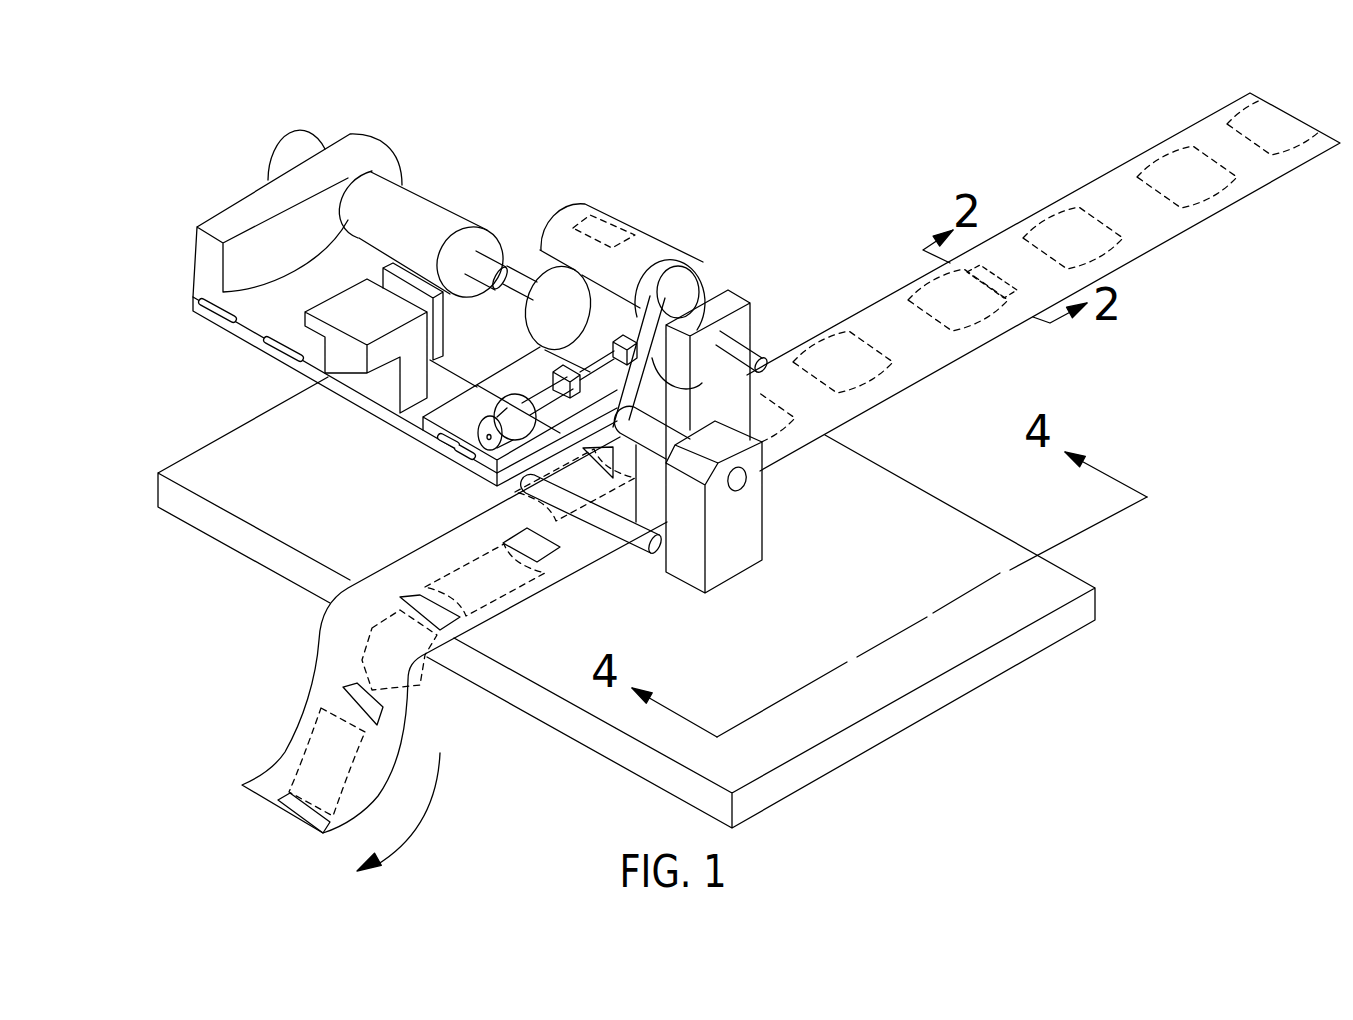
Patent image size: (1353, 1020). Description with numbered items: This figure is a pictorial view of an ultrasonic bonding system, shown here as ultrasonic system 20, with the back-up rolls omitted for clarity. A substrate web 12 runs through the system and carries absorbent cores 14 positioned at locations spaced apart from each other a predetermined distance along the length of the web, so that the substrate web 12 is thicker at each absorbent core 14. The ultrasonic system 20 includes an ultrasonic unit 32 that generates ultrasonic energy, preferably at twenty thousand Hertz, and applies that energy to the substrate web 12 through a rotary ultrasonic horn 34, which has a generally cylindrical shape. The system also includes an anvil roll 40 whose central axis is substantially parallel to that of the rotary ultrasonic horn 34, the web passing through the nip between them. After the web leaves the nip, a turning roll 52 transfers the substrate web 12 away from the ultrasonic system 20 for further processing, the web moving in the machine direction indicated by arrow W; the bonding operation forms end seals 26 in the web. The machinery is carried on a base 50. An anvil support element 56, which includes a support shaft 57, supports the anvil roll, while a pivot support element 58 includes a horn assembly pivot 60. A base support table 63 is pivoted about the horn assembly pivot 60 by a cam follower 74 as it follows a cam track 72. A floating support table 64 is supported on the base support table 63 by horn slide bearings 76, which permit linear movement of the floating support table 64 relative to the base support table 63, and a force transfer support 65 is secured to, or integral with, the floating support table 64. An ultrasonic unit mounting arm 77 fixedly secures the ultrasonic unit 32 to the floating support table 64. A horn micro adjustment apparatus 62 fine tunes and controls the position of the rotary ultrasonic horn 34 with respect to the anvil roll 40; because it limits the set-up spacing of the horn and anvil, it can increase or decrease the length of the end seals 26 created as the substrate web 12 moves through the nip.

The substrate web 12 is at (1096, 175).
The absorbent cores 14 is at (1150, 224).
The ultrasonic system 20 is at (734, 172).
The end seals 26 is at (313, 677).
The ultrasonic unit 32 is at (419, 190).
The rotary ultrasonic horn 34 is at (524, 248).
The anvil roll 40 is at (712, 275).
The base 50 is at (1072, 578).
The turning roll 52 is at (633, 553).
The anvil support element 56 is at (751, 303).
The support shaft 57 is at (766, 352).
The pivot support element 58 is at (765, 522).
The horn assembly pivot 60 is at (748, 482).
The horn micro adjustment apparatus 62 is at (483, 458).
The base support table 63 is at (337, 393).
The floating support table 64 is at (404, 427).
The force transfer support 65 is at (440, 326).
The cam track 72 is at (704, 276).
The cam follower 74 is at (664, 388).
The horn slide bearings 76 is at (277, 350).
The ultrasonic unit mounting arm 77 is at (221, 222).
The arrow W (machine direction) W is at (443, 786).